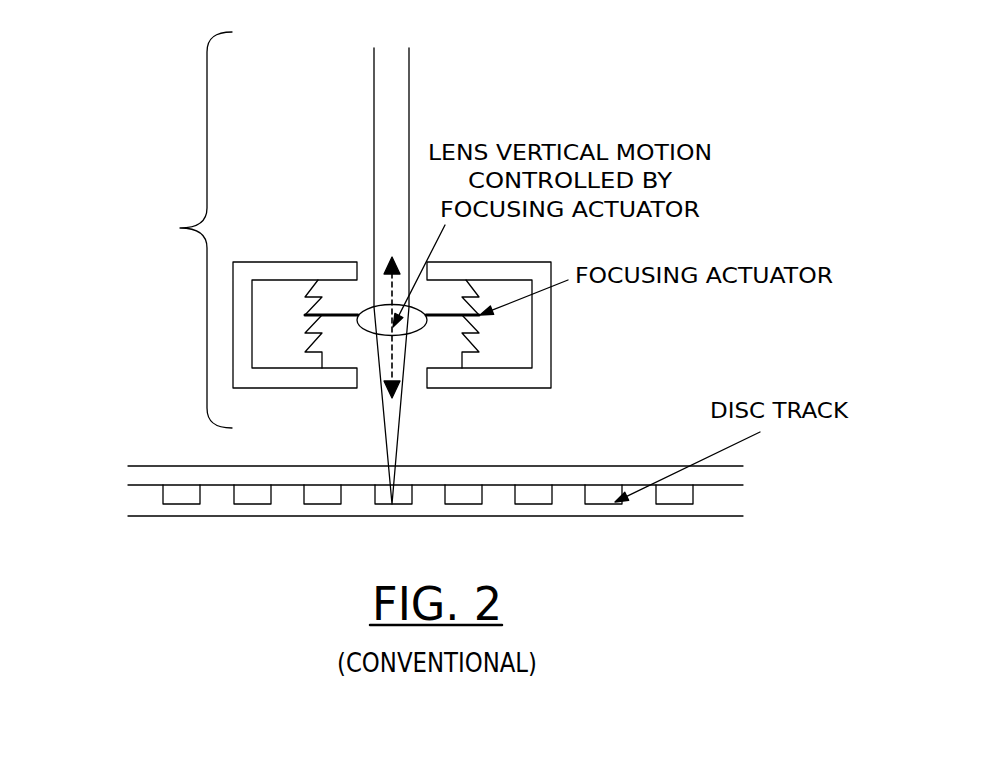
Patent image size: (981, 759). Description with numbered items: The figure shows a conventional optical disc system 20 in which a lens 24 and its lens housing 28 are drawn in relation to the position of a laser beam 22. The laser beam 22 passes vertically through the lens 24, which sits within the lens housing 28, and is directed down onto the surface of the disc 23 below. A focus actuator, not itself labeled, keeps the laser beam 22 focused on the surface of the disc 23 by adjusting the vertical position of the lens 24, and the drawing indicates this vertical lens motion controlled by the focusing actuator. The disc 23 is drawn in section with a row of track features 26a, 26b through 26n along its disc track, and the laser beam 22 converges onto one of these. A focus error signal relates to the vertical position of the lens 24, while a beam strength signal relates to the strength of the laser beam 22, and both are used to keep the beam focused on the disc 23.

The optical disc system 20 is at (652, 33).
The laser beam 22 is at (367, 213).
The disc 23 is at (474, 472).
The lens 24 is at (362, 293).
The disc track pit 26a is at (178, 504).
The disc track pit 26b is at (248, 504).
The disc track pit 26n is at (668, 505).
The lens housing 28 is at (233, 358).